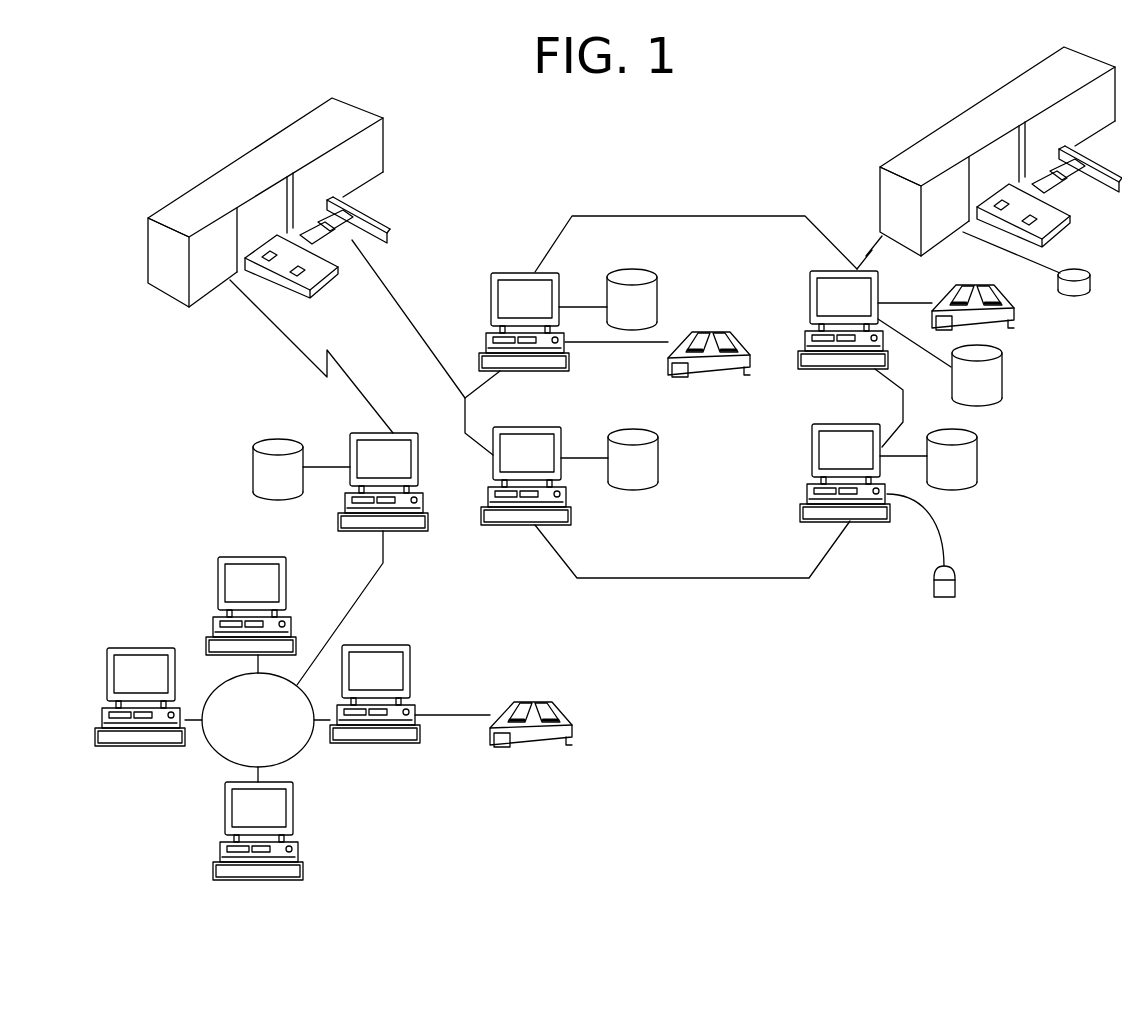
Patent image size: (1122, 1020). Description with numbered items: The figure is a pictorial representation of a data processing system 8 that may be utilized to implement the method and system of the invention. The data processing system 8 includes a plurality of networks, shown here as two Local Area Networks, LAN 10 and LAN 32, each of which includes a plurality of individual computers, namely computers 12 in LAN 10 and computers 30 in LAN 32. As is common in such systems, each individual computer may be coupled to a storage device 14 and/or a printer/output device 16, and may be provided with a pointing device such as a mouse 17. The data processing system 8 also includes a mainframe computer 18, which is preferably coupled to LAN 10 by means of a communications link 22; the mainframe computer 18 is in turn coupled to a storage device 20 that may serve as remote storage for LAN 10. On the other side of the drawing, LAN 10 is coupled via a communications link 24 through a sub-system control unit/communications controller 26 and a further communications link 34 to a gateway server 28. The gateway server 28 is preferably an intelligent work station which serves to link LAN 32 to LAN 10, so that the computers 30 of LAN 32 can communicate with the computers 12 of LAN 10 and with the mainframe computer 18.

The data processing system 8 is at (752, 203).
The Local Area Network 10 is at (687, 578).
The individual computer 12 is at (512, 273).
The storage device 14 is at (648, 270).
The printer/output device 16 is at (733, 330).
The mouse 17 is at (955, 585).
The mainframe computer 18 is at (957, 117).
The storage device 20 is at (1068, 297).
The communications link 22 is at (869, 252).
The communications link 24 is at (395, 298).
The sub-system control unit/communications controller 26 is at (208, 180).
The gateway server 28 is at (350, 437).
The individual computer 30 is at (220, 580).
The Local Area Network 32 is at (210, 748).
The communications link 34 is at (263, 318).